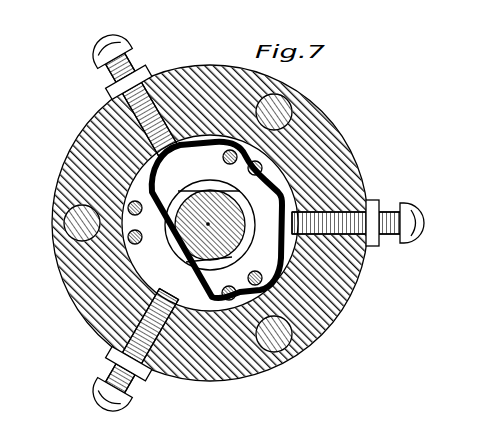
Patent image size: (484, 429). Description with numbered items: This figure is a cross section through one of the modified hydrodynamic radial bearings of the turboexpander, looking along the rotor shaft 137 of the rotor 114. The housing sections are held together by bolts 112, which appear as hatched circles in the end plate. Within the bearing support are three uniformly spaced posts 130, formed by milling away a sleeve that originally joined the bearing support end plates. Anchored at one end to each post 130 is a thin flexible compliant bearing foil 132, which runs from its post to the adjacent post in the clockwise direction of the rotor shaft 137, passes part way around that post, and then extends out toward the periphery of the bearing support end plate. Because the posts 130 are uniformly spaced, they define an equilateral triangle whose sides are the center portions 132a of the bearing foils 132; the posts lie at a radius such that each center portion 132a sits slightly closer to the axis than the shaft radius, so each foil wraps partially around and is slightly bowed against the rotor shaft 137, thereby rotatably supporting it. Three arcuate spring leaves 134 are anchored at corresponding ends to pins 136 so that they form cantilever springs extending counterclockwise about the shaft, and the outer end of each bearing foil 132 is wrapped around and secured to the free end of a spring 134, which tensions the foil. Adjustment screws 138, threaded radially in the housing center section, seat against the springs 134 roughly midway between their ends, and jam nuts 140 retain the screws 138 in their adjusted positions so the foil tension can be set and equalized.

The bolts 112 is at (288, 104).
The rotor 114 is at (243, 239).
The posts 130 is at (166, 230).
The bearing foil 132 is at (160, 196).
The center portions 132a is at (207, 188).
The spring leaves 134 is at (218, 145).
The pins 136 is at (237, 151).
The rotor shaft 137 is at (228, 222).
The adjustment screws 138 is at (122, 42).
The jam nuts 140 is at (147, 72).